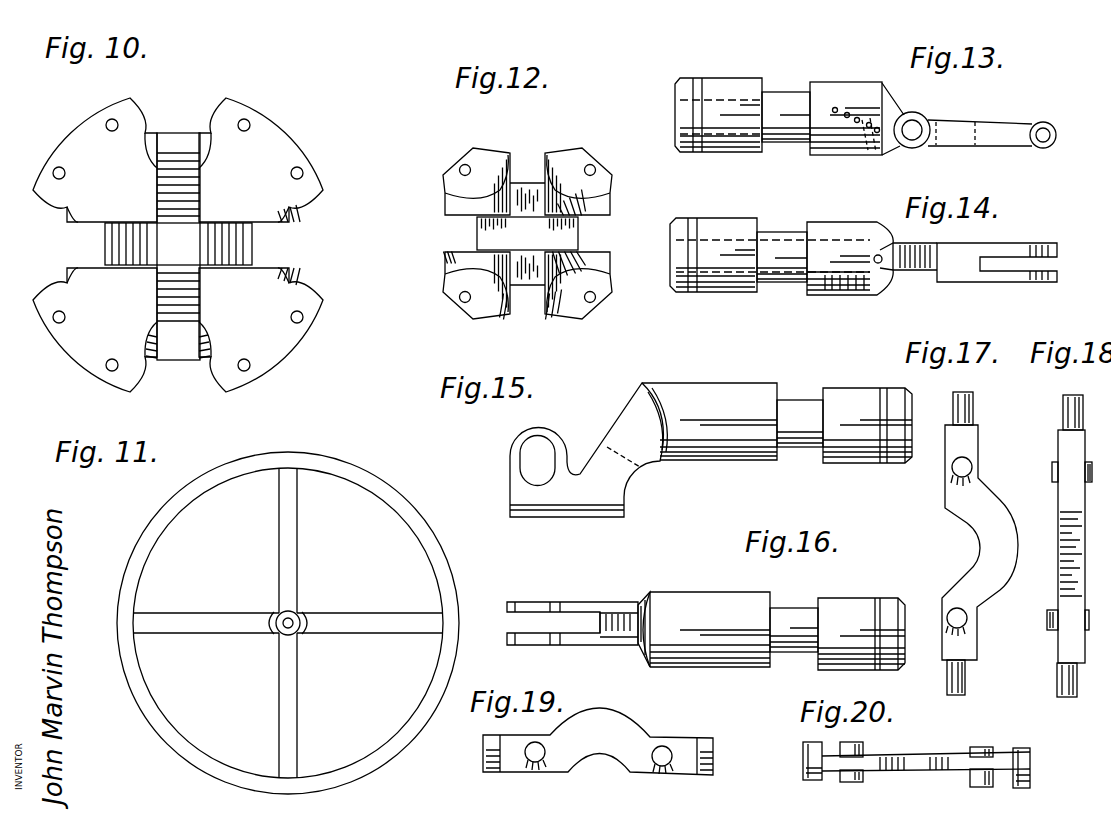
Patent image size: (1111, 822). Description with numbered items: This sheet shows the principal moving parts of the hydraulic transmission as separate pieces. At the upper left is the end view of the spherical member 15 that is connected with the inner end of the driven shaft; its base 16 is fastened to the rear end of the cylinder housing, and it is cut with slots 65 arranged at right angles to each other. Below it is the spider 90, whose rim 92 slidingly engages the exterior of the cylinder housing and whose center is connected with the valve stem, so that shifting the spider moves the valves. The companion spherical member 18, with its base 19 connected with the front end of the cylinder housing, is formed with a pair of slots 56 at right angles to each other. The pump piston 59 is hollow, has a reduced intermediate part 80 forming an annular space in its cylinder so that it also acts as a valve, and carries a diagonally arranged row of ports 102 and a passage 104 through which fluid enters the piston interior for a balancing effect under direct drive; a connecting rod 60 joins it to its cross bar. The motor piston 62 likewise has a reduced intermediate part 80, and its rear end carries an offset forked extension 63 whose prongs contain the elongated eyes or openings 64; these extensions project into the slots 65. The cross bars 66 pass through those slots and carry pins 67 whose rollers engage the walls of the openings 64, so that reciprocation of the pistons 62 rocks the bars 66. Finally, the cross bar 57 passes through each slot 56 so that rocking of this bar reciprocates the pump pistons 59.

In FIG. 10, the spherical member 15 is at (127, 239).
In FIG. 10, the base 16 is at (266, 245).
In FIG. 10, the slots 65 is at (185, 248).
In FIG. 12, the spherical member 18 is at (525, 223).
In FIG. 12, the base 19 is at (596, 233).
In FIG. 12, the slots 56 is at (530, 222).
In FIG. 13, the piston 59 is at (749, 73).
In FIG. 14, the piston 59 is at (751, 214).
In FIG. 13, the reduced intermediate part 80 is at (800, 102).
In FIG. 14, the reduced intermediate part 80 is at (787, 236).
In FIG. 15, the reduced intermediate part 80 is at (802, 400).
In FIG. 16, the reduced intermediate part 80 is at (802, 606).
In FIG. 13, the ports 102 is at (862, 98).
In FIG. 13, the passage 104 is at (868, 152).
In FIG. 14, the passage 104 is at (884, 280).
In FIG. 13, the connecting rods 60 is at (1008, 126).
In FIG. 14, the connecting rods 60 is at (960, 283).
In FIG. 15, the piston 62 is at (856, 383).
In FIG. 16, the piston 62 is at (741, 670).
In FIG. 15, the offset forked extension 63 is at (560, 450).
In FIG. 16, the offset forked extension 63 is at (587, 606).
In FIG. 15, the elongated eyes or openings 64 is at (520, 468).
In FIG. 17, the cross bars 66 is at (1008, 538).
In FIG. 18, the cross bars 66 is at (1080, 546).
In FIG. 17, the pins 67 is at (950, 475).
In FIG. 18, the pins 67 is at (1052, 471).
In FIG. 11, the spider 90 is at (226, 612).
In FIG. 11, the rim 92 is at (438, 551).
In FIG. 19, the cross bar 57 is at (632, 732).
In FIG. 20, the cross bar 57 is at (910, 792).